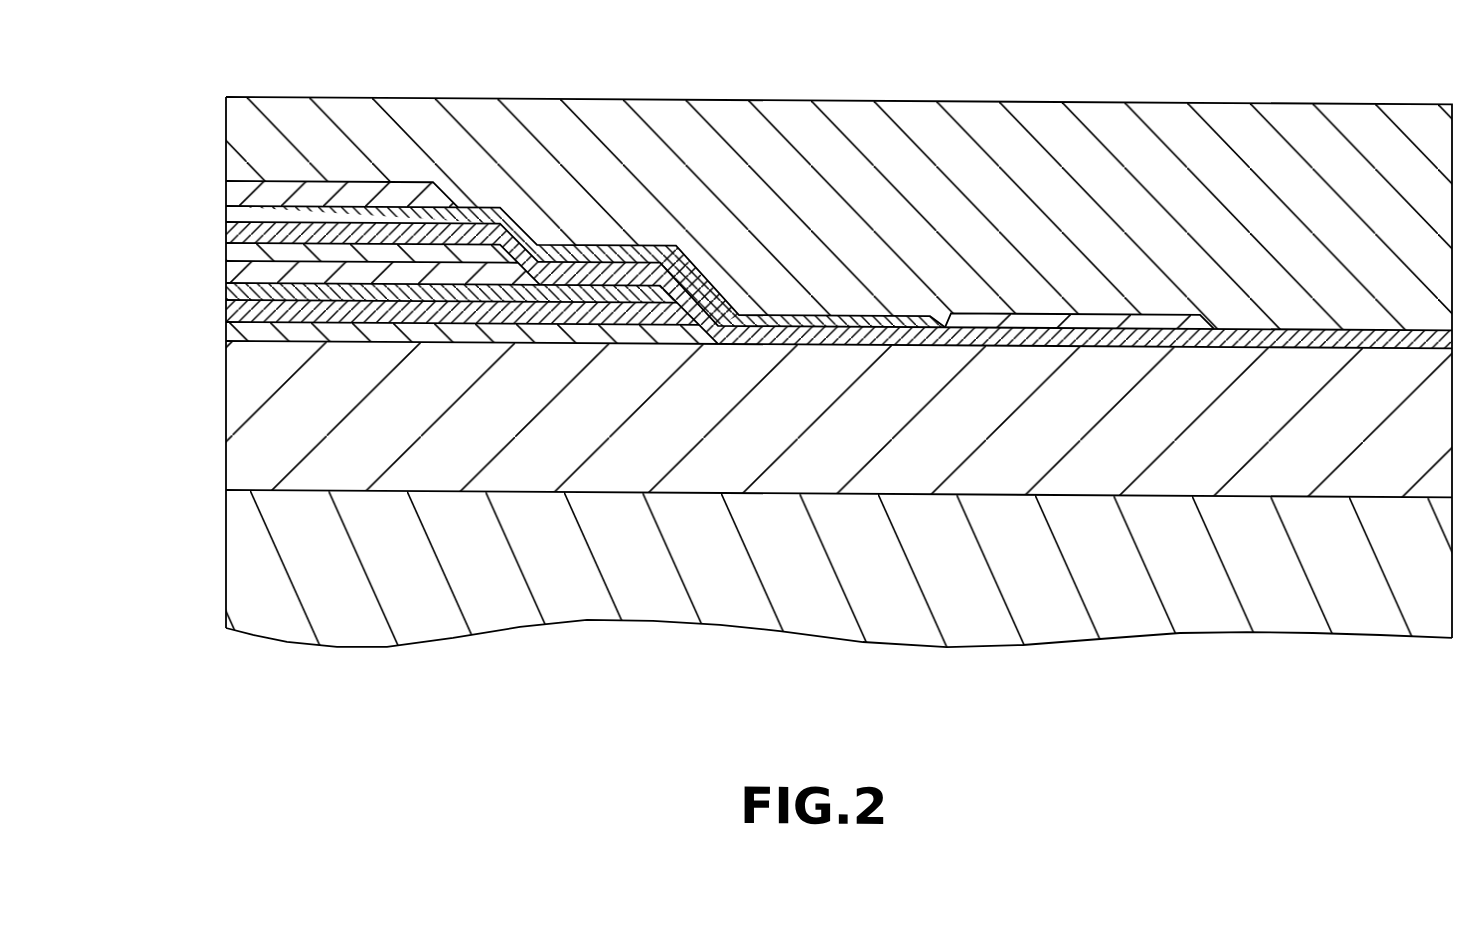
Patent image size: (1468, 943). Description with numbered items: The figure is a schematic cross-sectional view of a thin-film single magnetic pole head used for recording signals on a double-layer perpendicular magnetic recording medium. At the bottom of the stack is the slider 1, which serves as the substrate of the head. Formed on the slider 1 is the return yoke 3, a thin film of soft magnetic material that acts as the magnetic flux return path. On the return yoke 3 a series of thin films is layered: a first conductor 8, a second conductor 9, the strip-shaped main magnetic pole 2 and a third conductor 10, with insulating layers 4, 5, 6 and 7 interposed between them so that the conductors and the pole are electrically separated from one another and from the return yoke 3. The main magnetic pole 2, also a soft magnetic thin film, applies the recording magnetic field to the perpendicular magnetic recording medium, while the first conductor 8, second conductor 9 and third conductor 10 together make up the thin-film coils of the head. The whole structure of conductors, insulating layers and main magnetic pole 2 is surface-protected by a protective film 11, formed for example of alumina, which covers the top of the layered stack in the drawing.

The slider 1 is at (254, 540).
The main magnetic pole 2 is at (644, 262).
The return yoke 3 is at (266, 413).
The insulating layer 4 is at (232, 334).
The insulating layer 5 is at (232, 292).
The insulating layer 6 is at (232, 252).
The insulating layer 7 is at (230, 213).
The first conductor 8 is at (232, 312).
The second conductor 9 is at (232, 273).
The third conductor 10 is at (232, 194).
The protective film 11 is at (974, 117).